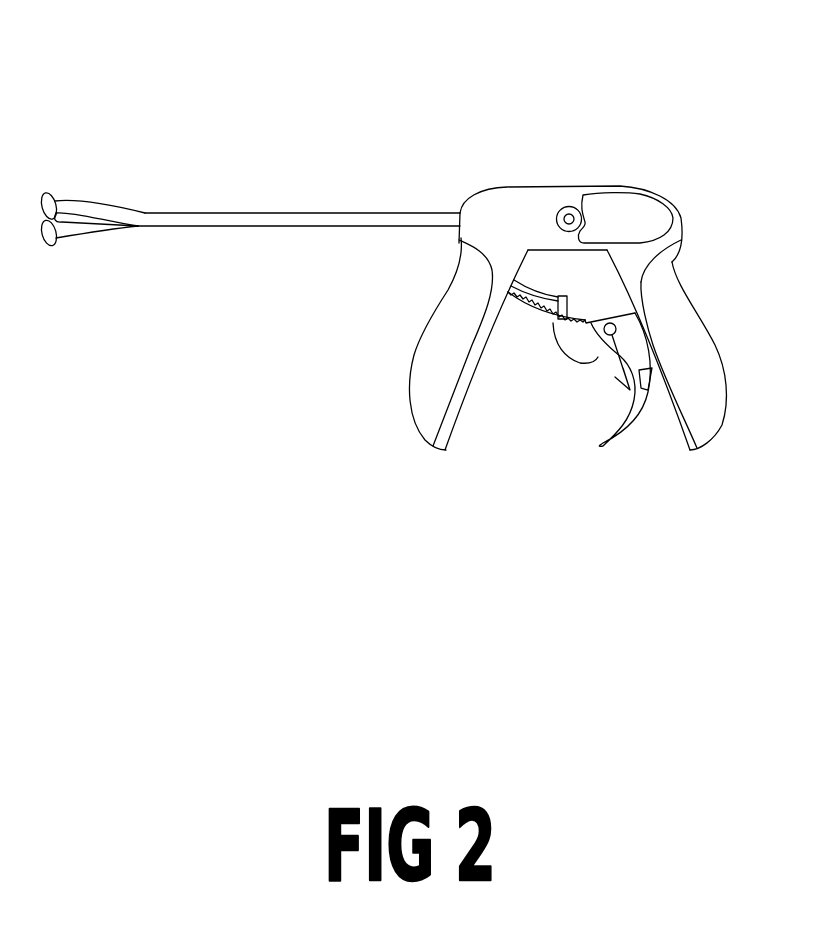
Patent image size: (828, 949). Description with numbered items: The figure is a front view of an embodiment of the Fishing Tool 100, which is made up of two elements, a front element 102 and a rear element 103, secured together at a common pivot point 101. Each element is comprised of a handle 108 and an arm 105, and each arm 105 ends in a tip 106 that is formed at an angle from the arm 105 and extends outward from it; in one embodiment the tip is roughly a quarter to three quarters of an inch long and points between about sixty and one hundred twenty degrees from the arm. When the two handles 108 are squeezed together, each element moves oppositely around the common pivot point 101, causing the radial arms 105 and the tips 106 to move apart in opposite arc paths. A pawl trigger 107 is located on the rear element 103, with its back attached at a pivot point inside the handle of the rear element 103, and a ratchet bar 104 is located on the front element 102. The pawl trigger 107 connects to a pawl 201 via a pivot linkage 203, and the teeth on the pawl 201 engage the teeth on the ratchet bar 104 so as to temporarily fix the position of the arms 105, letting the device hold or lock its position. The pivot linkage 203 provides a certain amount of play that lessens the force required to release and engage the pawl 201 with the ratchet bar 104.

The Fishing Tool 100 is at (497, 134).
The common pivot point 101 is at (578, 208).
The front element 102 is at (625, 220).
The rear element 103 is at (682, 223).
The ratchet bar 104 is at (568, 302).
The arm 105 is at (228, 220).
The tip 106 is at (55, 195).
The pawl trigger 107 is at (637, 333).
The handle 108 is at (433, 397).
The pawl 201 is at (573, 337).
The pivot linkage 203 is at (619, 380).